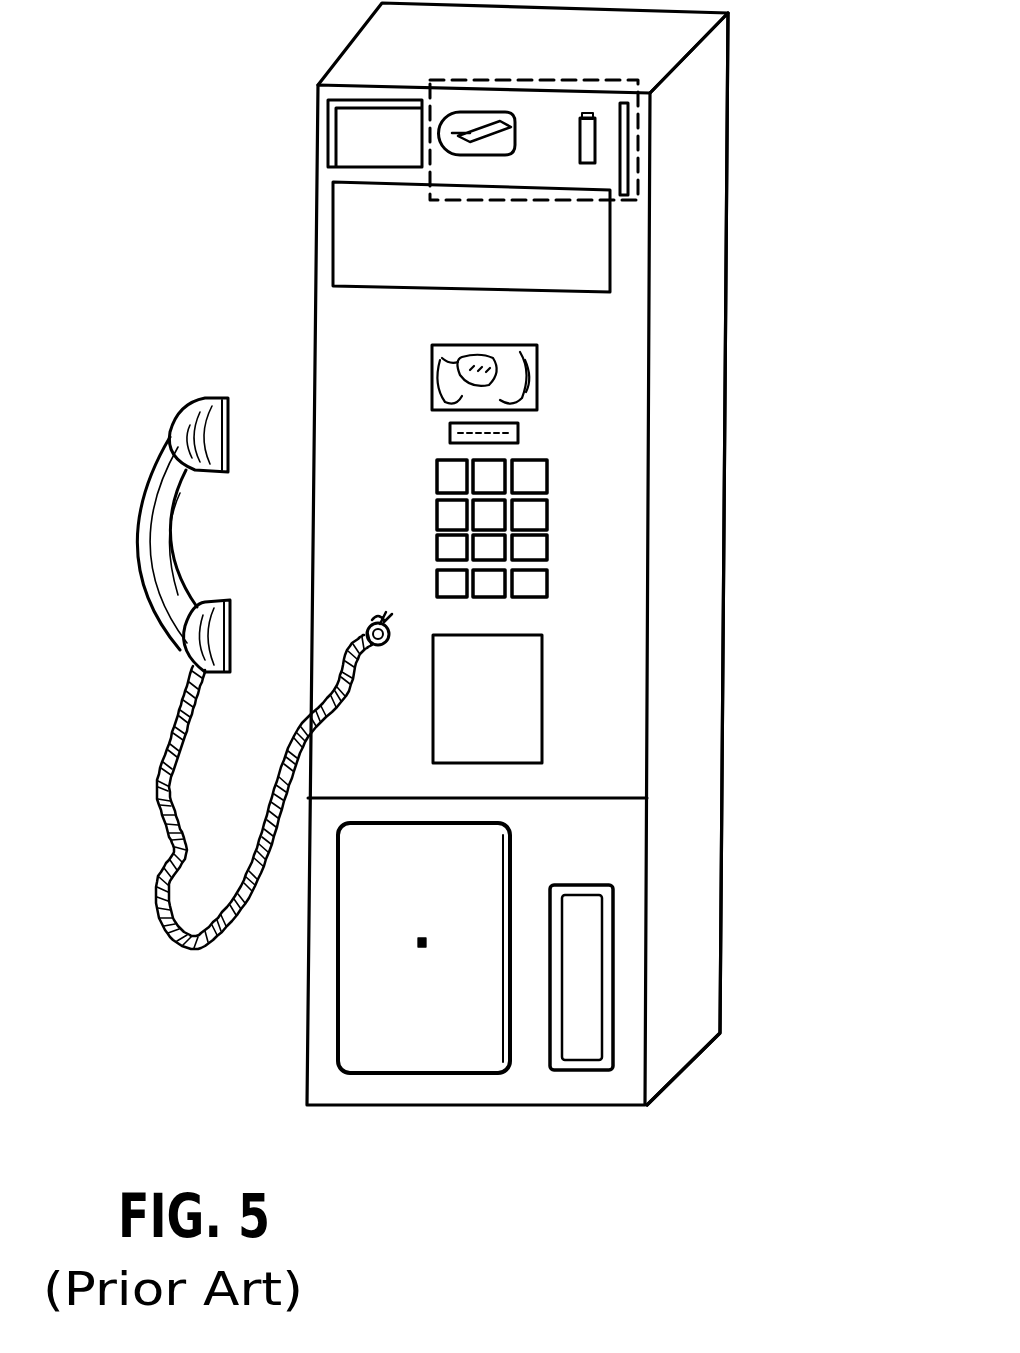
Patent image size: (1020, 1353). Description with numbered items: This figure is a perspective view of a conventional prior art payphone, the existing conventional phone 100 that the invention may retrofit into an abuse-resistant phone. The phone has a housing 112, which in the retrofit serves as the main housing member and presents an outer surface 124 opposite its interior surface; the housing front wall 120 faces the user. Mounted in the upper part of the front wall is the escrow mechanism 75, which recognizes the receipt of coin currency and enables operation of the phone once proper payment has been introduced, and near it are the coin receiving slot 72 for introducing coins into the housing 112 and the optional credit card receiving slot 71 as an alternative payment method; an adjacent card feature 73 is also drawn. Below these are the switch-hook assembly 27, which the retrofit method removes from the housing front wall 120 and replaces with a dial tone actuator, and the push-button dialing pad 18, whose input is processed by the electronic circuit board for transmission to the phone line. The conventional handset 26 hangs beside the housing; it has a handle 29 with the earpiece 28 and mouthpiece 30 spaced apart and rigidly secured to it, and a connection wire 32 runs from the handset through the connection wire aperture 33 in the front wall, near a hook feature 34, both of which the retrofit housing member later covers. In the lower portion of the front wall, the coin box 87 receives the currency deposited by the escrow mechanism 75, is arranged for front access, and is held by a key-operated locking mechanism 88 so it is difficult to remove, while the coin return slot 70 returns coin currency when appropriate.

The conventional phone 100 is at (300, 178).
The housing 112 is at (678, 667).
The housing front wall 120 is at (607, 728).
The escrow mechanism 75 is at (533, 157).
The card reader 73 is at (467, 115).
The coin receiving slot 72 is at (578, 130).
The credit card receiving slot 71 is at (628, 103).
The switch-hook assembly 27 is at (440, 360).
The outer surface 124 is at (390, 478).
The push-button dialing pad 18 is at (568, 512).
The hook switch 34 is at (372, 622).
The connection wire aperture 33 is at (386, 621).
The handset 26 is at (156, 506).
The earpiece 28 is at (222, 410).
The handle 29 is at (153, 523).
The mouthpiece 30 is at (230, 630).
The connection wire 32 is at (193, 753).
The locking mechanism 88 is at (422, 942).
The coin box 87 is at (367, 1047).
The coin return slot 70 is at (587, 1002).